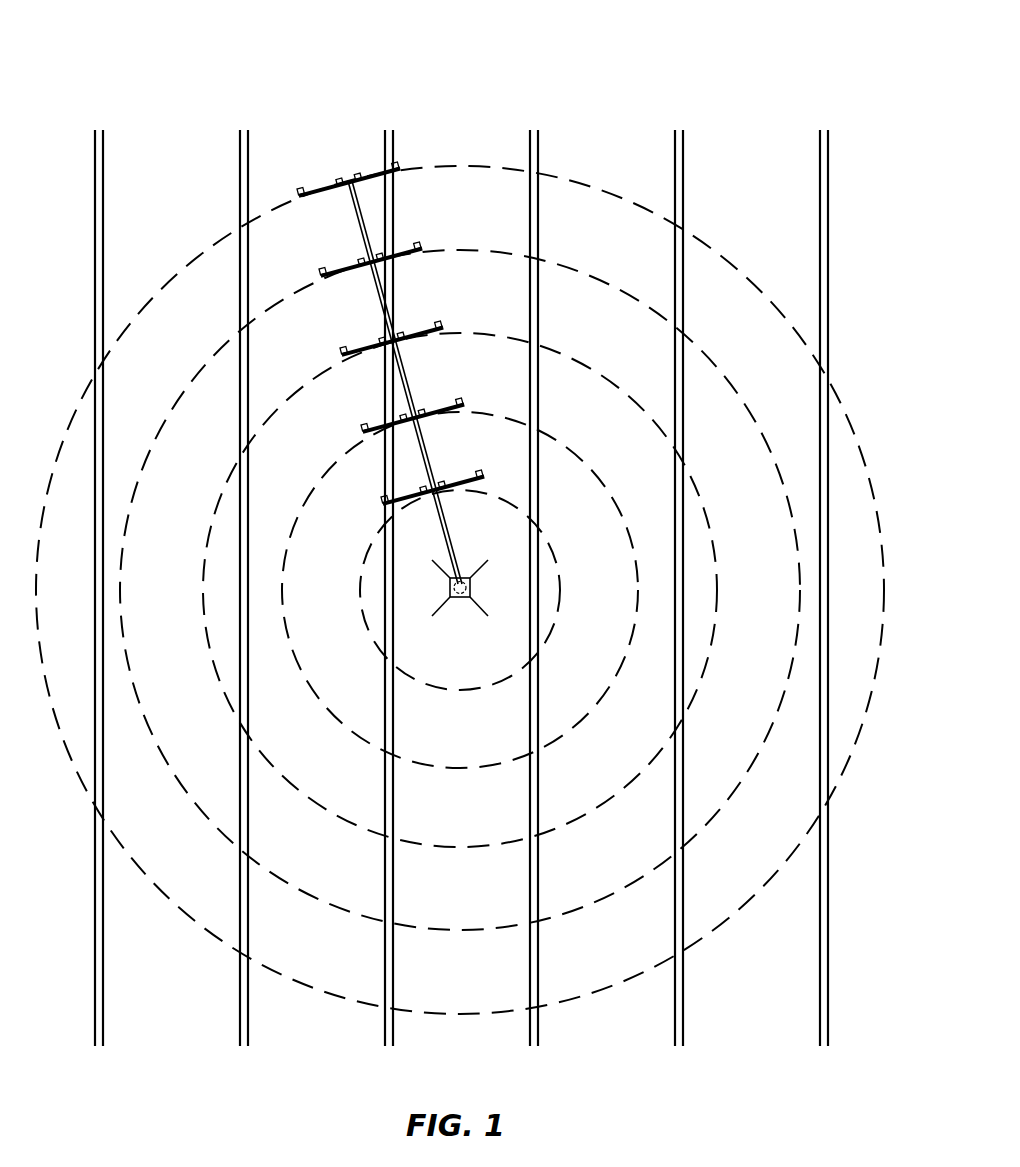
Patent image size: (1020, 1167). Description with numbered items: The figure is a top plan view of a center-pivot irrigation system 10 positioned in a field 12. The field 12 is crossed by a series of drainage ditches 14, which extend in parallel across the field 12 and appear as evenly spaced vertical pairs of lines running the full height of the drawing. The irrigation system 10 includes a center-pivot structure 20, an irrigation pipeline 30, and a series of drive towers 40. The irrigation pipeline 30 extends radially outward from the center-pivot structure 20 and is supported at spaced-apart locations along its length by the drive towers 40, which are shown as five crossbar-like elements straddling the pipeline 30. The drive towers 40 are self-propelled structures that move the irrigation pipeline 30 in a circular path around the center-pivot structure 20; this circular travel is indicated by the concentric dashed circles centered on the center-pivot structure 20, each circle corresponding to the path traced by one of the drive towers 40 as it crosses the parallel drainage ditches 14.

The irrigation system 10 is at (477, 444).
The field 12 is at (634, 62).
The drainage ditches 14 is at (829, 218).
The center-pivot structure 20 is at (464, 600).
The irrigation pipeline 30 is at (357, 228).
The drive towers 40 is at (332, 185).